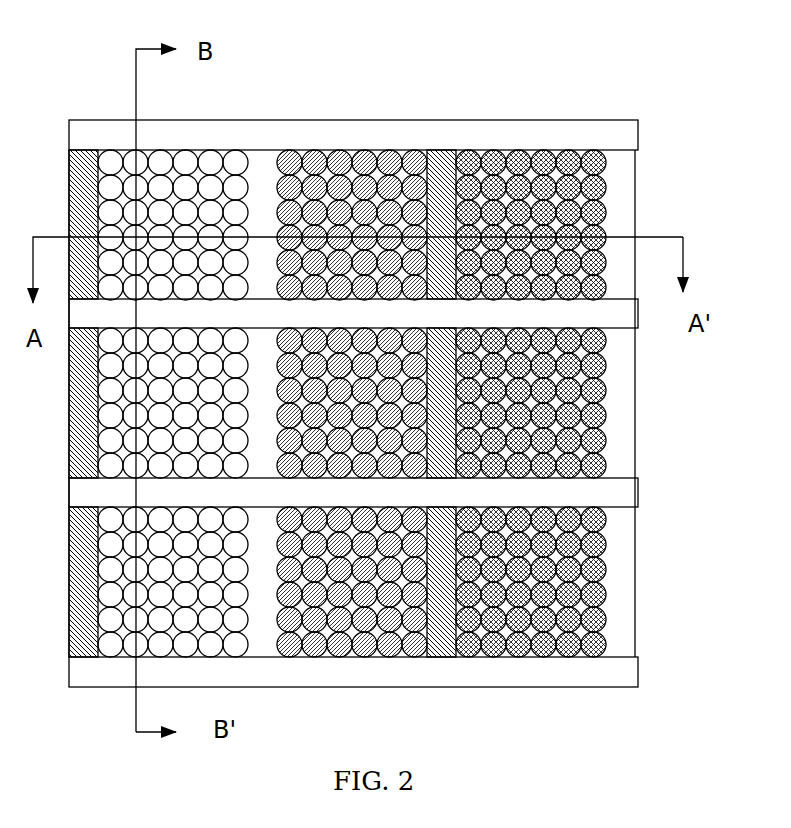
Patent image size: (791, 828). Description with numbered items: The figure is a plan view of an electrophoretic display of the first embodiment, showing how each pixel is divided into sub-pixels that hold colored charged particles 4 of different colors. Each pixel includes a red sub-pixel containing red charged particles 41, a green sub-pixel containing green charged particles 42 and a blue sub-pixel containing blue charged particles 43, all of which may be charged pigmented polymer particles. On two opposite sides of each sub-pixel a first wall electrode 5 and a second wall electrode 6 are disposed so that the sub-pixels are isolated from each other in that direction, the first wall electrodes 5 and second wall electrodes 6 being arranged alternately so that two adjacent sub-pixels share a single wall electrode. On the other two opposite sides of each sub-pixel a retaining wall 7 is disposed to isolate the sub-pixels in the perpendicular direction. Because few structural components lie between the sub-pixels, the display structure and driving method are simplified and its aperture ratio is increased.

The charged particles 4 is at (352, 335).
The red charged particles 41 is at (237, 162).
The green charged particles 42 is at (343, 162).
The blue charged particles 43 is at (531, 360).
The first wall electrode 5 is at (84, 163).
The second wall electrode 6 is at (620, 168).
The retaining wall 7 is at (171, 133).